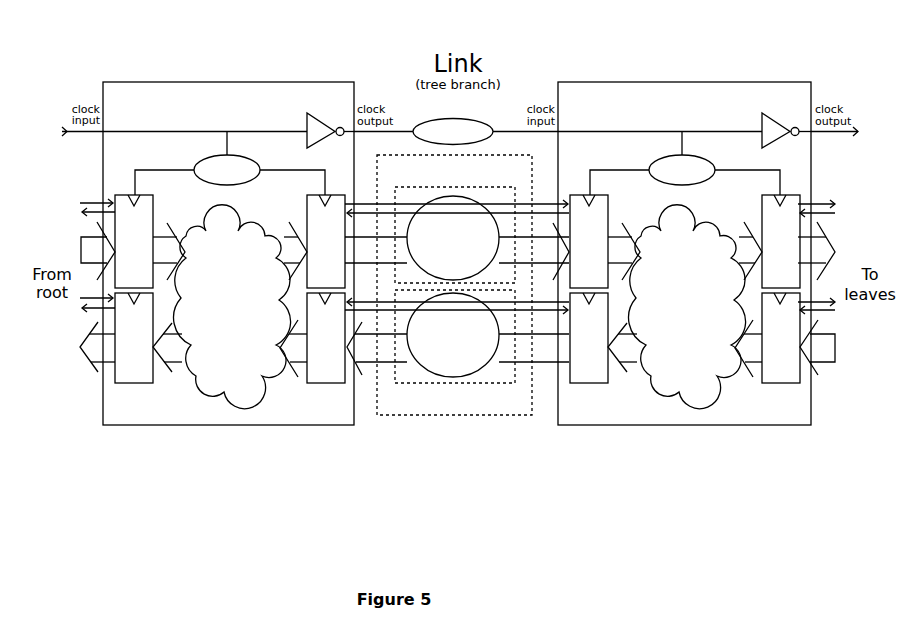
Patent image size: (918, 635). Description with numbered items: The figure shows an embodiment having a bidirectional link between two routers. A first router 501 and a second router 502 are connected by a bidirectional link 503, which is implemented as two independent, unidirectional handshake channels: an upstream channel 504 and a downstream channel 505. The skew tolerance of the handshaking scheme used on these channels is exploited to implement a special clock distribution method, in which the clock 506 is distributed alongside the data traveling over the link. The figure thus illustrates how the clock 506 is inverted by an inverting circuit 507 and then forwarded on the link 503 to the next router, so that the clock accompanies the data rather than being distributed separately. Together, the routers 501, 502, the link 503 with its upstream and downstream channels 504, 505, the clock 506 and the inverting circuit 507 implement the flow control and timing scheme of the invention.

The router 501 is at (228, 222).
The router 502 is at (722, 82).
The bidirectional link 503 is at (455, 320).
The upstream channel 504 is at (402, 385).
The downstream channel 505 is at (397, 278).
The clock 506 is at (508, 130).
The inverting circuit 507 is at (322, 118).